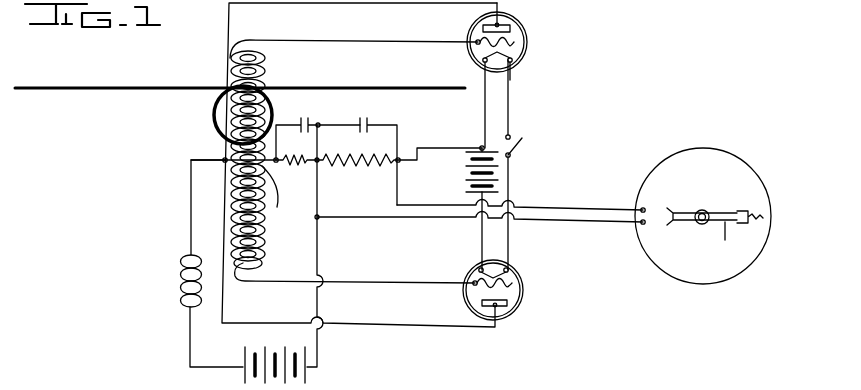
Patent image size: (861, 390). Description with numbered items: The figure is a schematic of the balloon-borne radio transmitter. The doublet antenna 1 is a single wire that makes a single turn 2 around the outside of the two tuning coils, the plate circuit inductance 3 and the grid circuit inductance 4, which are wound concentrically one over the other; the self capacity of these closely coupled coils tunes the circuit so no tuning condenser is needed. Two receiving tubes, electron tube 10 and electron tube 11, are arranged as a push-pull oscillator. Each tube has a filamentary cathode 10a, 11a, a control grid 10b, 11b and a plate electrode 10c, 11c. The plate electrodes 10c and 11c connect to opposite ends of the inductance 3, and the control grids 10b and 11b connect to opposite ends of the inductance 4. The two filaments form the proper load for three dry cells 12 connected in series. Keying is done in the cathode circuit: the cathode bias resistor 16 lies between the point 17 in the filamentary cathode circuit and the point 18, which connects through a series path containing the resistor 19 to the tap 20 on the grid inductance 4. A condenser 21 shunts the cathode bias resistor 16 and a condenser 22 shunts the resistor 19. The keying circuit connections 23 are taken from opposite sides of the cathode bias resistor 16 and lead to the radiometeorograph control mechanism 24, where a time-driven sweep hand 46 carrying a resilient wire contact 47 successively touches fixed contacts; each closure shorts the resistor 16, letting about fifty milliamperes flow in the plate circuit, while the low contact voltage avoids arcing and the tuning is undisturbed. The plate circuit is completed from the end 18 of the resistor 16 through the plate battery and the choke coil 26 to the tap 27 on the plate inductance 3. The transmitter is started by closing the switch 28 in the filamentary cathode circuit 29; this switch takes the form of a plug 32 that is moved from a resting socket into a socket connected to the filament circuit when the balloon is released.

The doublet antenna 1 is at (413, 77).
The single turn 2 is at (213, 113).
The plate circuit inductance 3 is at (221, 56).
The grid circuit inductance 4 is at (266, 164).
The electron tube 10 is at (502, 75).
The filamentary cathode 10a is at (508, 72).
The control grid 10b is at (528, 42).
The plate electrode 10c is at (481, 28).
The electron tube 11 is at (526, 295).
The filamentary cathode 11a is at (497, 268).
The control grid 11b is at (513, 282).
The plate electrode 11c is at (503, 311).
The dry cells 12 is at (462, 180).
The cathode bias resistor 16 is at (352, 170).
The point in filamentary cathode circuit 17 is at (478, 146).
The point 18 is at (307, 149).
The resistor 19 is at (266, 185).
The tap 20 is at (262, 218).
The condenser 21 is at (369, 124).
The condenser 22 is at (310, 125).
The keying circuit connections 23 is at (438, 218).
The radiometeorograph control mechanism 24 is at (719, 228).
The choke coil 26 is at (182, 270).
The tap 27 is at (217, 154).
The switch 28 is at (521, 145).
The filamentary cathode circuit 29 is at (513, 117).
The plug 32 is at (225, 198).
The sweep hand 46 is at (725, 240).
The resilient wire contact 47 is at (753, 210).